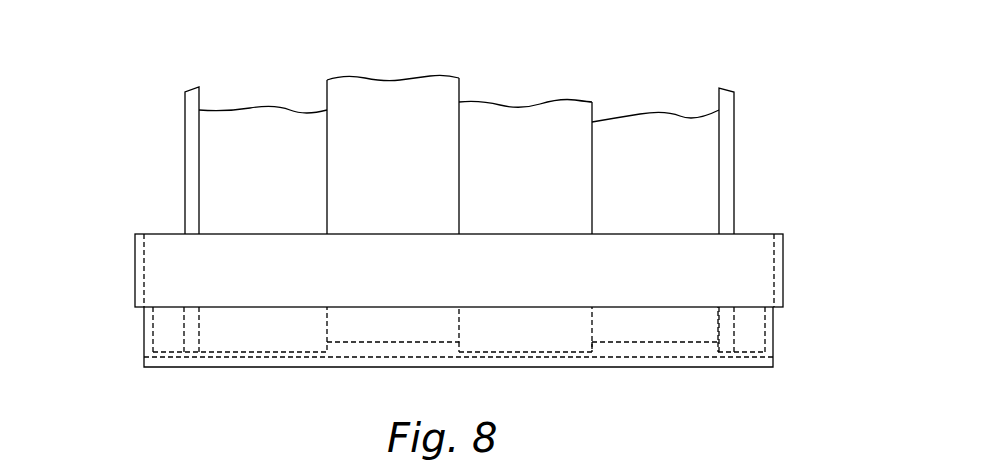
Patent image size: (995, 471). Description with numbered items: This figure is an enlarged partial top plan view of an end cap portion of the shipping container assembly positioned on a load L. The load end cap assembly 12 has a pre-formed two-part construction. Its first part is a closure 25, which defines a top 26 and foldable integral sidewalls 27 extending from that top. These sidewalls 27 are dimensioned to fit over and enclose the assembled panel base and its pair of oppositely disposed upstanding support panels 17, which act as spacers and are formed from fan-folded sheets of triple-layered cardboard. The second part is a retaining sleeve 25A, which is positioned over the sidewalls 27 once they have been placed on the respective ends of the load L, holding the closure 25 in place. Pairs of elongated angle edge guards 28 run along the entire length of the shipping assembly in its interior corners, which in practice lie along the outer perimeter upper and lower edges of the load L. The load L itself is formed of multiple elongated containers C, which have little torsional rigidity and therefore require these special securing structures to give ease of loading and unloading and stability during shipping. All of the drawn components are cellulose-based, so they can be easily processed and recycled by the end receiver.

The load end cap assembly 12 is at (826, 333).
The upstanding support panel 17 is at (173, 340).
The closure 25 is at (773, 343).
The retaining sleeve 25A is at (760, 272).
The top 26 is at (370, 360).
The foldable integral sidewall 27 is at (150, 322).
The elongated angle edge guard 28 is at (190, 128).
The elongated container C is at (357, 117).
The load L is at (553, 128).